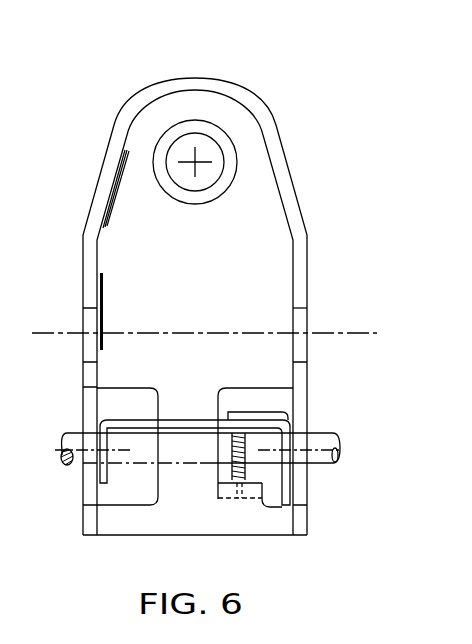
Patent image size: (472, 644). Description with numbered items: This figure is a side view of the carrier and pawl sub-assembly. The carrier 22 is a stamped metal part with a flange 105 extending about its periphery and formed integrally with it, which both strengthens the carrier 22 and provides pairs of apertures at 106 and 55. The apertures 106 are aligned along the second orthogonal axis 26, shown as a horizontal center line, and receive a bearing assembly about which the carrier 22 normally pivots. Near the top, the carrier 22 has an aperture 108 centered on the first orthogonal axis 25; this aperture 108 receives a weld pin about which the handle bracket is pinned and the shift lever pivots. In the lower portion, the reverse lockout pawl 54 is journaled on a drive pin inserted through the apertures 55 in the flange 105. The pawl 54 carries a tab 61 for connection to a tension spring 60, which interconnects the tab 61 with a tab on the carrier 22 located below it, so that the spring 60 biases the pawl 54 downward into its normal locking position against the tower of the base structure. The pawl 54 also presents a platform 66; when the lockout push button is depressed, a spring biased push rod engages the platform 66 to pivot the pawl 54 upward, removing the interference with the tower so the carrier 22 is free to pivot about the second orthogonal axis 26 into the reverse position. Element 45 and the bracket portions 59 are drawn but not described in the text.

The carrier 22 is at (203, 266).
The first orthogonal axis 25 is at (195, 162).
The second orthogonal axis 26 is at (50, 331).
The pin 45 is at (67, 467).
The reverse lockout pawl 54 is at (338, 458).
The apertures 55 is at (302, 438).
The support brackets 59 is at (115, 388).
The tension spring 60 is at (288, 465).
The tab 61 is at (253, 413).
The platform 66 is at (188, 420).
The flange 105 is at (277, 172).
The apertures 106 is at (300, 322).
The aperture 108 is at (206, 133).